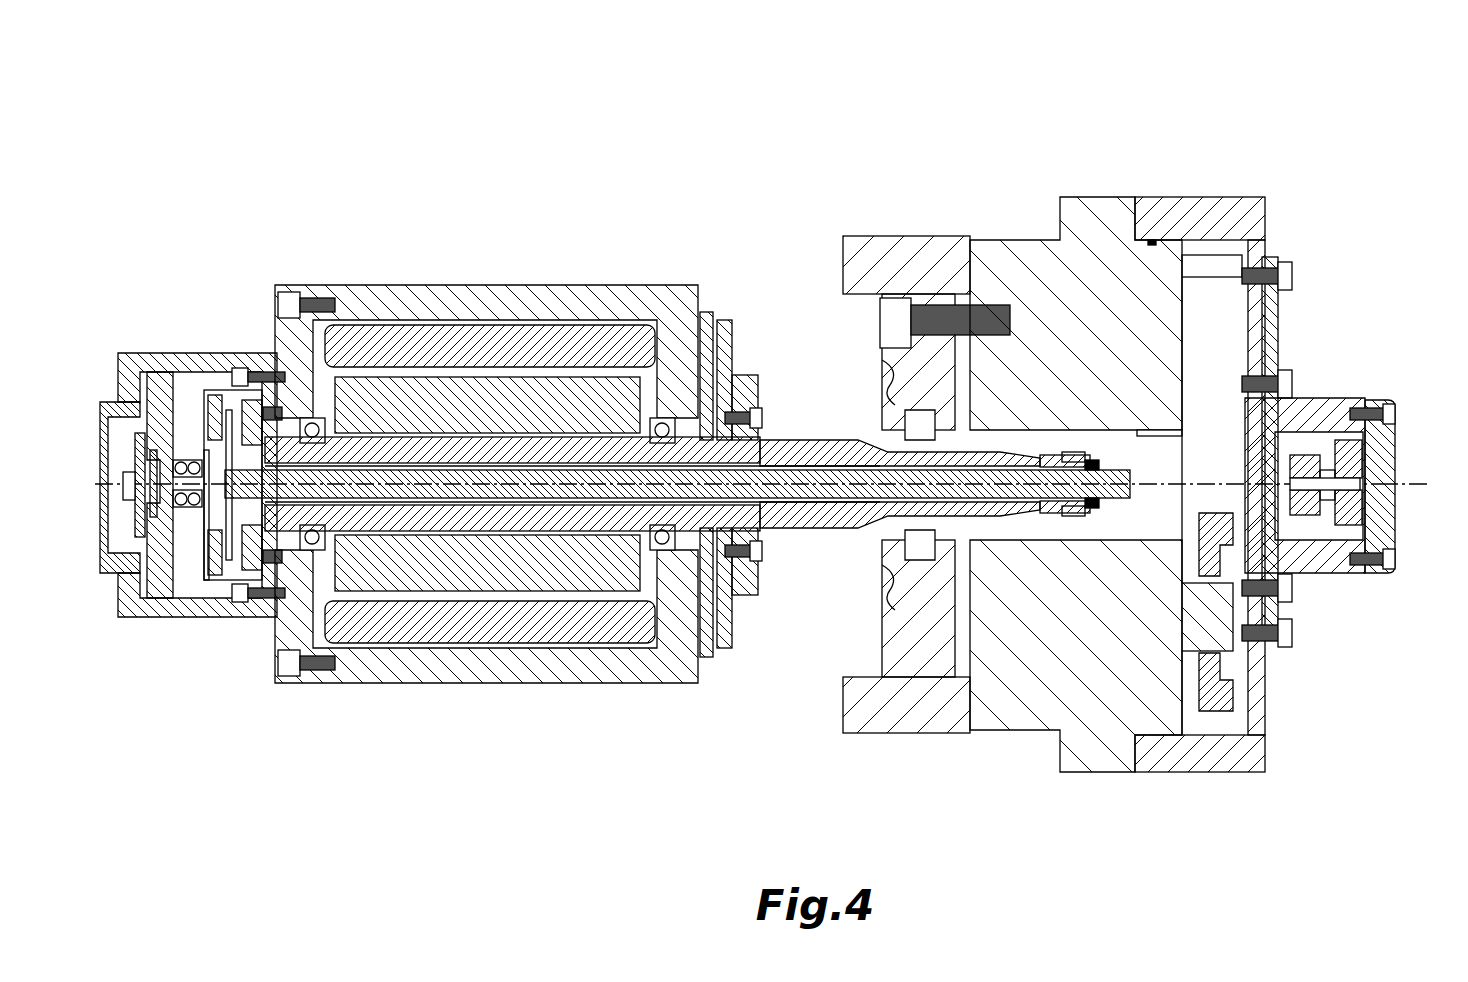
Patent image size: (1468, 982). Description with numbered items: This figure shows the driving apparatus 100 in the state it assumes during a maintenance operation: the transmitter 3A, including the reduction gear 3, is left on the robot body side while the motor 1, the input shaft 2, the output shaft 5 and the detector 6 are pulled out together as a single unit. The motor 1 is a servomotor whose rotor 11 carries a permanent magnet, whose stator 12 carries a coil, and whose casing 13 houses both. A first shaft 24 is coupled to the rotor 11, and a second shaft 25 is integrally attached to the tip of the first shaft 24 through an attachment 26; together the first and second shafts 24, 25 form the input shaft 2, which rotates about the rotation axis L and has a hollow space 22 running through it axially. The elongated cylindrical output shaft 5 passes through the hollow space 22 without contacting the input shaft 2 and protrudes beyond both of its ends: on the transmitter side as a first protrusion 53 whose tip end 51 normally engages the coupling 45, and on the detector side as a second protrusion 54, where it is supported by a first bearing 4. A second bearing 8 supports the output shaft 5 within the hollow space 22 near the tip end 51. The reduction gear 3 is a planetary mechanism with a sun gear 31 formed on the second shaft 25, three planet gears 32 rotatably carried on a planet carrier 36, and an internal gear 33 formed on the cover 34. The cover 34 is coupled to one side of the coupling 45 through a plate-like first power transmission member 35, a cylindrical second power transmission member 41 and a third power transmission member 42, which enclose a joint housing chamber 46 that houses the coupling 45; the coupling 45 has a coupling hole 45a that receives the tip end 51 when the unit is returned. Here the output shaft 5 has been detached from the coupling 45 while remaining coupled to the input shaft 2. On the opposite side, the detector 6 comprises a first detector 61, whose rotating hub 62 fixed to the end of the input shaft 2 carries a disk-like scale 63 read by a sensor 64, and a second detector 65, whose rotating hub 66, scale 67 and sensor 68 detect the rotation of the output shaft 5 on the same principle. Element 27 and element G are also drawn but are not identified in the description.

The driving apparatus 100 is at (400, 112).
The motor 1 is at (387, 266).
The input shaft 2 is at (600, 792).
The reduction gear 3 is at (1288, 191).
The transmitter 3A is at (1372, 130).
The first supporting member (first bearing) 4 is at (183, 500).
The output shaft 5 is at (1085, 512).
The detector 6 is at (124, 624).
The second supporting member (second bearing) 8 is at (1105, 432).
The rotor 11 is at (572, 400).
The stator 12 is at (440, 345).
The casing 13 is at (532, 660).
The hollow space 22 is at (420, 500).
The first shaft 24 is at (600, 520).
The second shaft 25 is at (895, 530).
The attachment 26 is at (722, 325).
The spacer block 27 is at (1112, 505).
The sun gear 31 is at (1047, 535).
The planet gears 32 is at (1235, 745).
The internal gear 33 is at (1225, 263).
The cover 34 is at (1228, 265).
The first power transmission member 35 is at (1270, 320).
The planet carrier 36 is at (1090, 752).
The second power transmission member 41 is at (1314, 412).
The third power transmission member 42 is at (1380, 528).
The coupling 45 is at (1353, 465).
The coupling hole 45a is at (1305, 490).
The joint housing chamber 46 is at (1345, 440).
The tip end 51 is at (1222, 655).
The first protrusion 53 is at (1150, 440).
The second protrusion 54 is at (207, 480).
The first detector 61 is at (138, 700).
The rotating hub 62 is at (247, 582).
The scale 63 is at (229, 582).
The sensor (rotation detector) 64 is at (212, 582).
The second detector 65 is at (250, 272).
The rotating hub 66 is at (168, 470).
The scale 67 is at (154, 460).
The sensor (rotation detector) 68 is at (137, 450).
The gap G is at (1197, 300).
The rotation axis L is at (1417, 484).